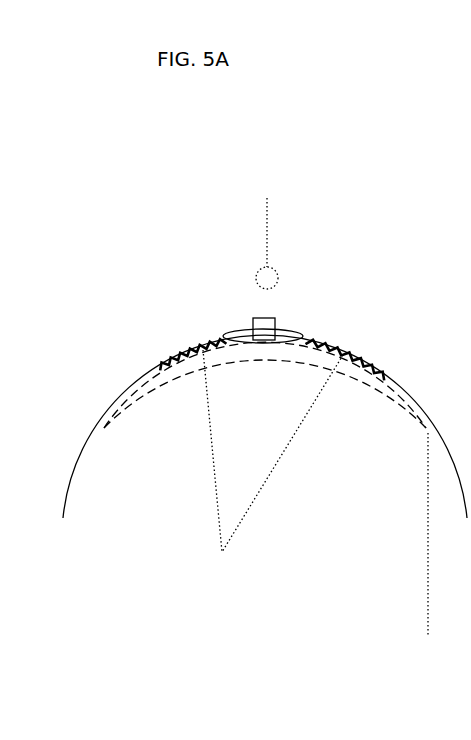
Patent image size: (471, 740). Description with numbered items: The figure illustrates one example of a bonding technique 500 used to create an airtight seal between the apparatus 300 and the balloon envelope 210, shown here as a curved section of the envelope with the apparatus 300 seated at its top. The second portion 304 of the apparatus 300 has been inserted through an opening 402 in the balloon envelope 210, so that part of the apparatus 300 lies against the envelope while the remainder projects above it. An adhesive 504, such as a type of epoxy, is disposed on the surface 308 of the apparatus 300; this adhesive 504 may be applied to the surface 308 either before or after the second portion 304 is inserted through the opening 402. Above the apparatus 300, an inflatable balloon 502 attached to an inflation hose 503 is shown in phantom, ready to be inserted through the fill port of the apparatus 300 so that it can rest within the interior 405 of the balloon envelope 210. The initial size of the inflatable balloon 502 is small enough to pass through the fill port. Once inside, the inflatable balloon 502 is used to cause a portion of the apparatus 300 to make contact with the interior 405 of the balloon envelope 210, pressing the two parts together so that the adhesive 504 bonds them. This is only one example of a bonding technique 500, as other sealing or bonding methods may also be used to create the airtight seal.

The bonding technique 500 is at (380, 68).
The balloon envelope 210 is at (135, 387).
The interior of the balloon envelope 405 is at (155, 453).
The surface of apparatus 308 is at (382, 398).
The opening 402 is at (220, 330).
The apparatus 300 is at (284, 304).
The inflatable balloon 502 is at (253, 273).
The inflation hose 503 is at (267, 213).
The adhesive 504 is at (273, 460).
The second portion 304 is at (434, 546).